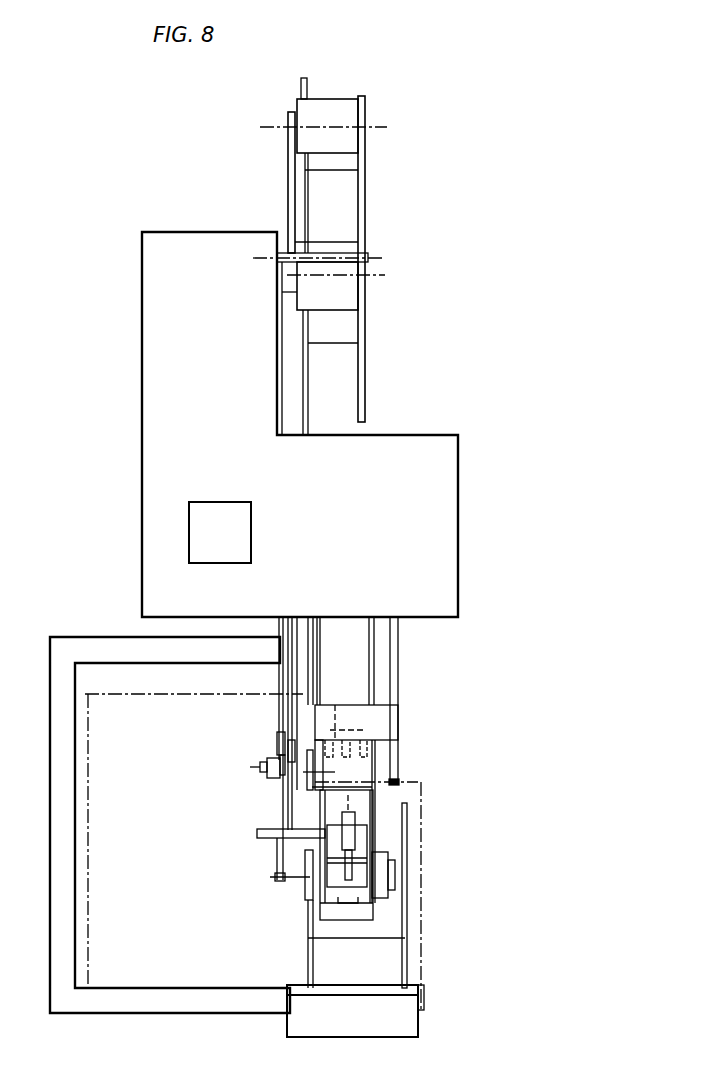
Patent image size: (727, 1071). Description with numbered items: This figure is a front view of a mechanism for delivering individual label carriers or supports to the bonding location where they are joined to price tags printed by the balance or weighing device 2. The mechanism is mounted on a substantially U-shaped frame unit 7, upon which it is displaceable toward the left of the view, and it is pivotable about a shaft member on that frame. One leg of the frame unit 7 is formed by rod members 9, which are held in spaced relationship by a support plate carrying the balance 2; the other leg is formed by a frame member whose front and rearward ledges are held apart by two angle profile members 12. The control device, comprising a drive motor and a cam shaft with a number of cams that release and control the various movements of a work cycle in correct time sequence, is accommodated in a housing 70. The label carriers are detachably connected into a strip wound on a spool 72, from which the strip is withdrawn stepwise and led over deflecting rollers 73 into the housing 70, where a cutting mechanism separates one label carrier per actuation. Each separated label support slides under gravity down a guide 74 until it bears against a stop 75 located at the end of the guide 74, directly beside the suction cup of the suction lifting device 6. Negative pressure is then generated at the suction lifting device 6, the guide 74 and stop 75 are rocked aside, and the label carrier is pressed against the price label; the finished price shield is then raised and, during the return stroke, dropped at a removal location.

The balance or weighing device 2 is at (93, 750).
The suction lifting device 6 is at (353, 883).
The frame unit 7 is at (93, 629).
The rod members 9 is at (162, 1003).
The angle profile members 12 is at (174, 652).
The housing 70 is at (347, 535).
The spool 72 is at (350, 212).
The deflecting rollers 73 is at (328, 110).
The guide 74 is at (370, 643).
The stop 75 is at (363, 915).